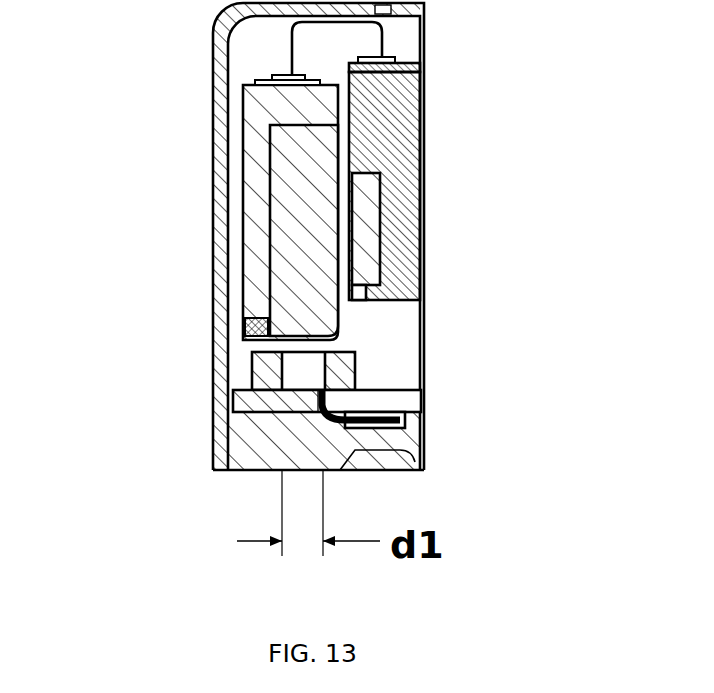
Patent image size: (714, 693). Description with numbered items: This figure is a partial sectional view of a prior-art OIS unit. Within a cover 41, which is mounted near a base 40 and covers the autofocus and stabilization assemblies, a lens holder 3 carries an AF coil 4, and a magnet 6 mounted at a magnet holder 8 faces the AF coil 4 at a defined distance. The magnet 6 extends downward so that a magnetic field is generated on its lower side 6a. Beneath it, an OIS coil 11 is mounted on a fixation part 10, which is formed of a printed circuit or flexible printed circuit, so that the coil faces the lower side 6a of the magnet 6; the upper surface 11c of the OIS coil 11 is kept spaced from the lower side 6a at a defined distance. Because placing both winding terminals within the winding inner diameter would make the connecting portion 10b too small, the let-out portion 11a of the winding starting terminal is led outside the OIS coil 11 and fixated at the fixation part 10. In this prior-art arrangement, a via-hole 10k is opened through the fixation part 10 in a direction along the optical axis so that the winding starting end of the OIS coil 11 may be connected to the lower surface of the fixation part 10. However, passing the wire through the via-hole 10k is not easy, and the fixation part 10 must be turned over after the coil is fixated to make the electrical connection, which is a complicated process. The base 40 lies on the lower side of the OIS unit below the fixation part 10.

The lens holder 3 is at (398, 130).
The AF coil 4 is at (365, 228).
The magnet 6 is at (298, 212).
The lower side of the magnet 6a is at (258, 342).
The magnet holder 8 is at (245, 105).
The fixation part 10 is at (290, 402).
The connecting portion 10b is at (380, 412).
The via-hole 10k is at (357, 393).
The OIS coil 11 is at (252, 381).
The let-out portion of the winding starting terminal 11a is at (410, 418).
The upper surface of the OIS coil 11c is at (262, 350).
The base 40 is at (420, 458).
The cover 41 is at (228, 36).